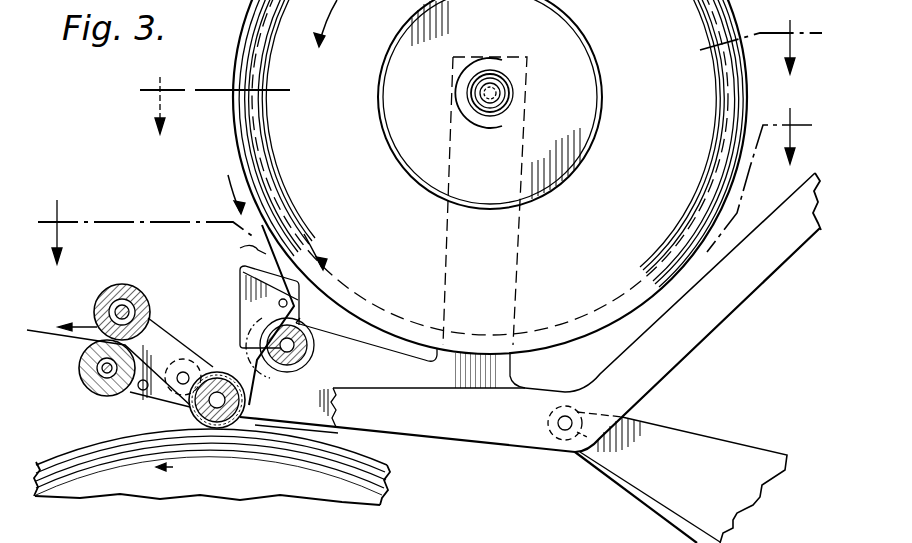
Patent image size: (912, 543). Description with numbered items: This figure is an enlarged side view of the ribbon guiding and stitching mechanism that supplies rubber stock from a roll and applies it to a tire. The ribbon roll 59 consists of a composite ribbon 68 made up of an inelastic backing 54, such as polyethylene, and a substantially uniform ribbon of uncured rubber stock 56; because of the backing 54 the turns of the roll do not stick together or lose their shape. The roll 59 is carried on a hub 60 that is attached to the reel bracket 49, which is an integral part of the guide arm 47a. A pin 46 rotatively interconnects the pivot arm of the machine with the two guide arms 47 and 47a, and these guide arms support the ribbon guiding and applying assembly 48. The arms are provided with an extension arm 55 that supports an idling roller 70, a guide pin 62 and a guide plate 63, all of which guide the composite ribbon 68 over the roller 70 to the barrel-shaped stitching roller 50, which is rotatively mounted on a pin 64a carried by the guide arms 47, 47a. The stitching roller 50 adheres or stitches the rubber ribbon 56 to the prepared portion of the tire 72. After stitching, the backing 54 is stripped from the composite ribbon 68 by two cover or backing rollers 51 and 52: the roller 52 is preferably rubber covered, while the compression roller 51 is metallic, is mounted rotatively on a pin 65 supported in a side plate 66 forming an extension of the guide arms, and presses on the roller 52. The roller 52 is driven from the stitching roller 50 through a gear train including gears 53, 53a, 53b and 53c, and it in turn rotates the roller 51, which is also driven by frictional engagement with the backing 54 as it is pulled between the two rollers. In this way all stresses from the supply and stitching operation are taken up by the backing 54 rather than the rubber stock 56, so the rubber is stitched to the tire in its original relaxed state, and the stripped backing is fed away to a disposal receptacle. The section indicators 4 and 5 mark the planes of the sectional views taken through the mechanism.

The section line 4- 4 is at (421, 183).
The section line 5- 5 is at (480, 74).
The pin 46 is at (557, 423).
The guide arm 47 is at (455, 433).
The guide arm 47a is at (398, 360).
The ribbon guiding and applying assembly 48 is at (130, 282).
The reel bracket 49 is at (502, 236).
The stitching roller 50 is at (254, 396).
The compression roller 51 is at (138, 296).
The backing roller 52 is at (94, 357).
The gear 53 is at (242, 372).
The gear 53a is at (175, 405).
The gear 53b is at (128, 400).
The gear 53c is at (80, 382).
The backing 54 is at (50, 329).
The extension arm 55 is at (302, 381).
The rubber stock 56 is at (92, 455).
The ribbon roll 59 is at (487, 177).
The hub 60 is at (492, 91).
The guide pin 62 is at (279, 304).
The guide plate 63 is at (245, 272).
The pin 64a is at (250, 416).
The pin 65 is at (96, 314).
The side plate 66 is at (166, 334).
The composite ribbon 68 is at (242, 246).
The idling roller 70 is at (312, 340).
The tire 72 is at (232, 495).